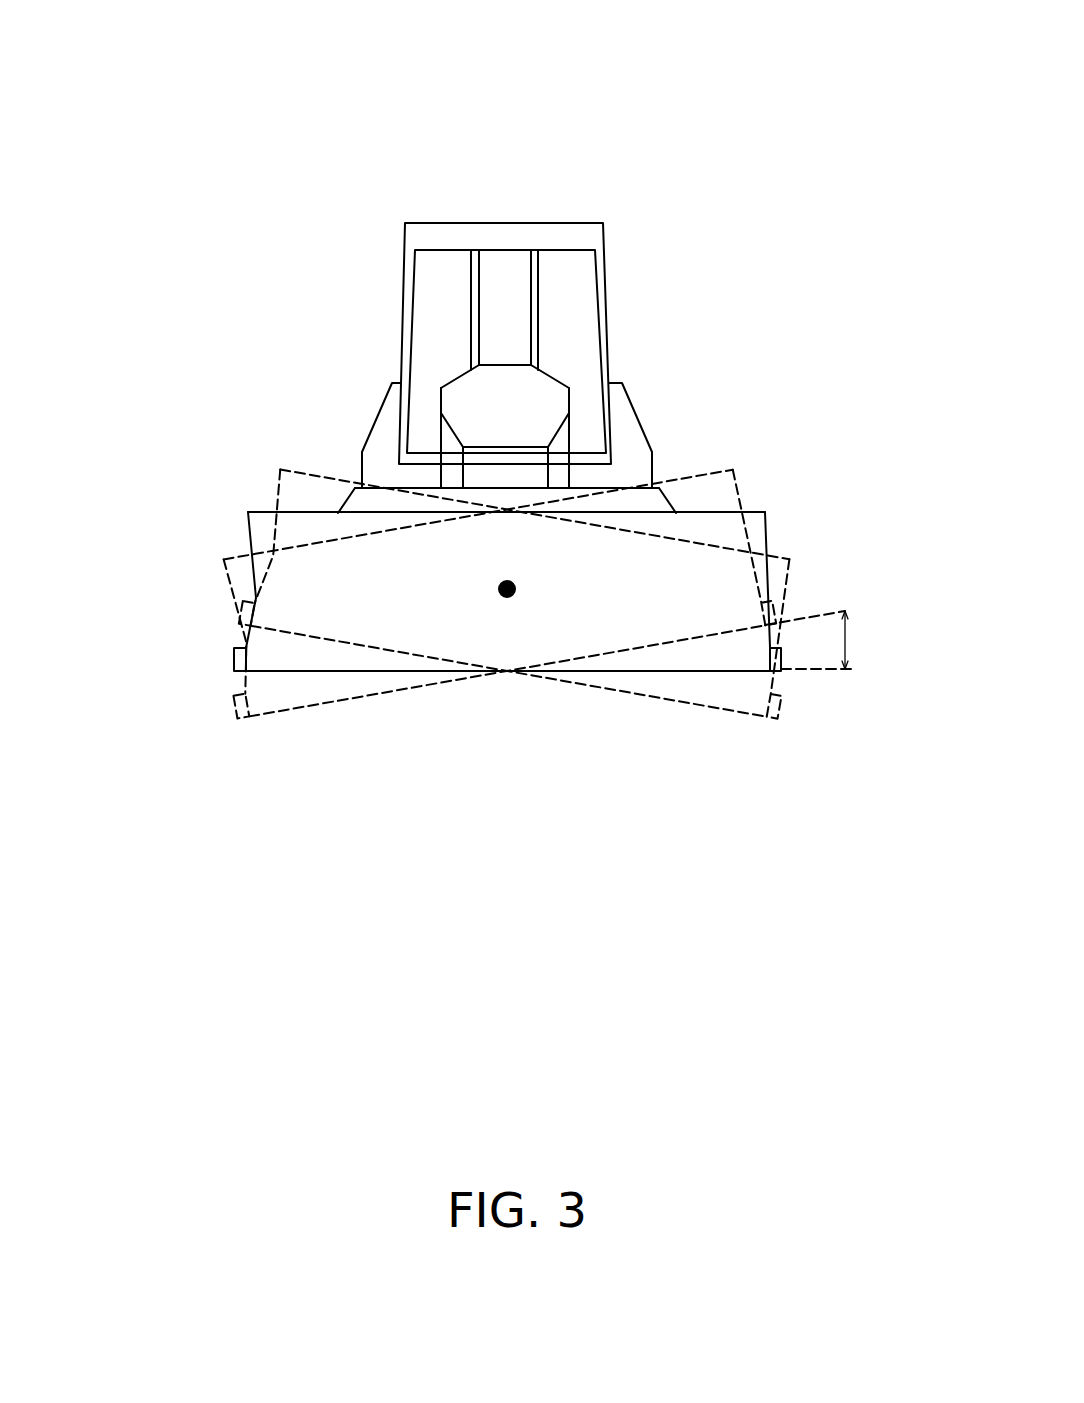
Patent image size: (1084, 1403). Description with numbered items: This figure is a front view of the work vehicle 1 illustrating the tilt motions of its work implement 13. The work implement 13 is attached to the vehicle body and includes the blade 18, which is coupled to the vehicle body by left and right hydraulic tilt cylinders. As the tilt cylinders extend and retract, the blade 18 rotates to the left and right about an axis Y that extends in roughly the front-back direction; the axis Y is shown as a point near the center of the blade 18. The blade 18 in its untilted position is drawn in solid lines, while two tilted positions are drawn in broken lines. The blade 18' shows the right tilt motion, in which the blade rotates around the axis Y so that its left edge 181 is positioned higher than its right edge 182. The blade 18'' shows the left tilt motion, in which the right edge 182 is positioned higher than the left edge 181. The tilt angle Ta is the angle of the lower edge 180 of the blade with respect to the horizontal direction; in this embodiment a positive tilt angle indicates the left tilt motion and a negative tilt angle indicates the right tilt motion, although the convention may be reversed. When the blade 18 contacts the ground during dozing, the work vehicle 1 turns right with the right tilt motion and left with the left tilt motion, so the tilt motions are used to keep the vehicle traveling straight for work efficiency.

The work vehicle 1 is at (350, 100).
The work implement 13 is at (707, 442).
The blade 18 is at (497, 571).
The blade in right tilt position 18' is at (545, 572).
The blade in left tilt position 18'' is at (469, 574).
The lower edge 180 is at (642, 671).
The left edge 181 is at (781, 660).
The right edge 182 is at (233, 662).
The axis Y is at (509, 598).
The tilt angle Ta is at (823, 640).